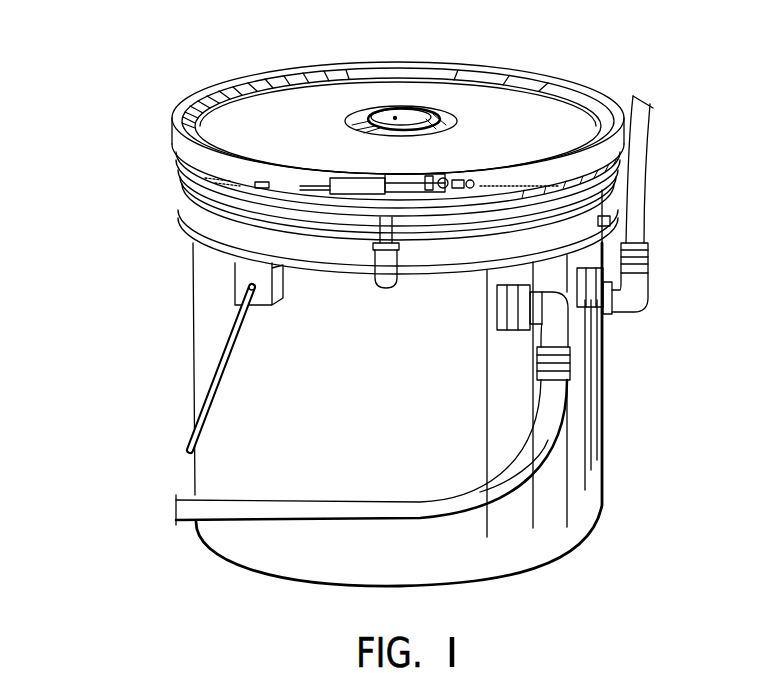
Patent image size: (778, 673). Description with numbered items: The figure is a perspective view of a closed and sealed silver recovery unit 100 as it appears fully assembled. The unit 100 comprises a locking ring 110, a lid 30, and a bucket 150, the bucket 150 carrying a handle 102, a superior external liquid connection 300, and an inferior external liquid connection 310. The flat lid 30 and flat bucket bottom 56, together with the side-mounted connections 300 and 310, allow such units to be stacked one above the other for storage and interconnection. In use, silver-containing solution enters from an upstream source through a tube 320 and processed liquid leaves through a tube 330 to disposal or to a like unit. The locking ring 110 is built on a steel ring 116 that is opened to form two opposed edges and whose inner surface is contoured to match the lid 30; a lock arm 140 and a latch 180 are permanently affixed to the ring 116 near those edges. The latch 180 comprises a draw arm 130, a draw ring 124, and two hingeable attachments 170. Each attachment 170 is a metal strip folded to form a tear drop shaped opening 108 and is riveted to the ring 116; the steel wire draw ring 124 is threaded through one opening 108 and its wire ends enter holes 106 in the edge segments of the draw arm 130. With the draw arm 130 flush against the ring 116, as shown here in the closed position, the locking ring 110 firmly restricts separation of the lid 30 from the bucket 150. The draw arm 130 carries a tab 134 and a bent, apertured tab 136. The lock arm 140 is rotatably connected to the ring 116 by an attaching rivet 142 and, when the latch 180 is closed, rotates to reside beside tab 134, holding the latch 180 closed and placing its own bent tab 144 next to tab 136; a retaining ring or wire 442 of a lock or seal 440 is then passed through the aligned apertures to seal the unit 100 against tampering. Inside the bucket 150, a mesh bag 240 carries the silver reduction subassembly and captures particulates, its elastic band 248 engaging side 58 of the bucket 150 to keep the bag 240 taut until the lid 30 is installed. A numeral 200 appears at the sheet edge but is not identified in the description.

The lid 30 is at (540, 122).
The bucket bottom 56 is at (528, 569).
The side 58 is at (195, 210).
The silver recovery unit 100 is at (140, 340).
The handle 102 is at (195, 408).
The hole 106 is at (328, 185).
The tear drop shaped opening 108 is at (443, 155).
The locking ring 110 is at (165, 140).
The steel ring 116 is at (199, 121).
The draw ring 124 is at (408, 180).
The draw arm 130 is at (400, 183).
The tab 134 is at (255, 216).
The tab 136 is at (606, 190).
The lock arm 140 is at (196, 243).
The attaching rivet 142 is at (266, 185).
The tab 144 is at (380, 222).
The bucket 150 is at (620, 441).
The hingeable attachment 170 is at (480, 182).
The latch 180 is at (430, 174).
The support 200 is at (136, 672).
The mesh bag 240 is at (207, 182).
The elastic band 248 is at (250, 204).
The superior external liquid connection 300 is at (645, 303).
The inferior external liquid connection 310 is at (578, 335).
The tube 320 is at (657, 166).
The tube 330 is at (530, 484).
The lock or seal 440 is at (376, 296).
The retaining ring or wire 442 is at (603, 226).